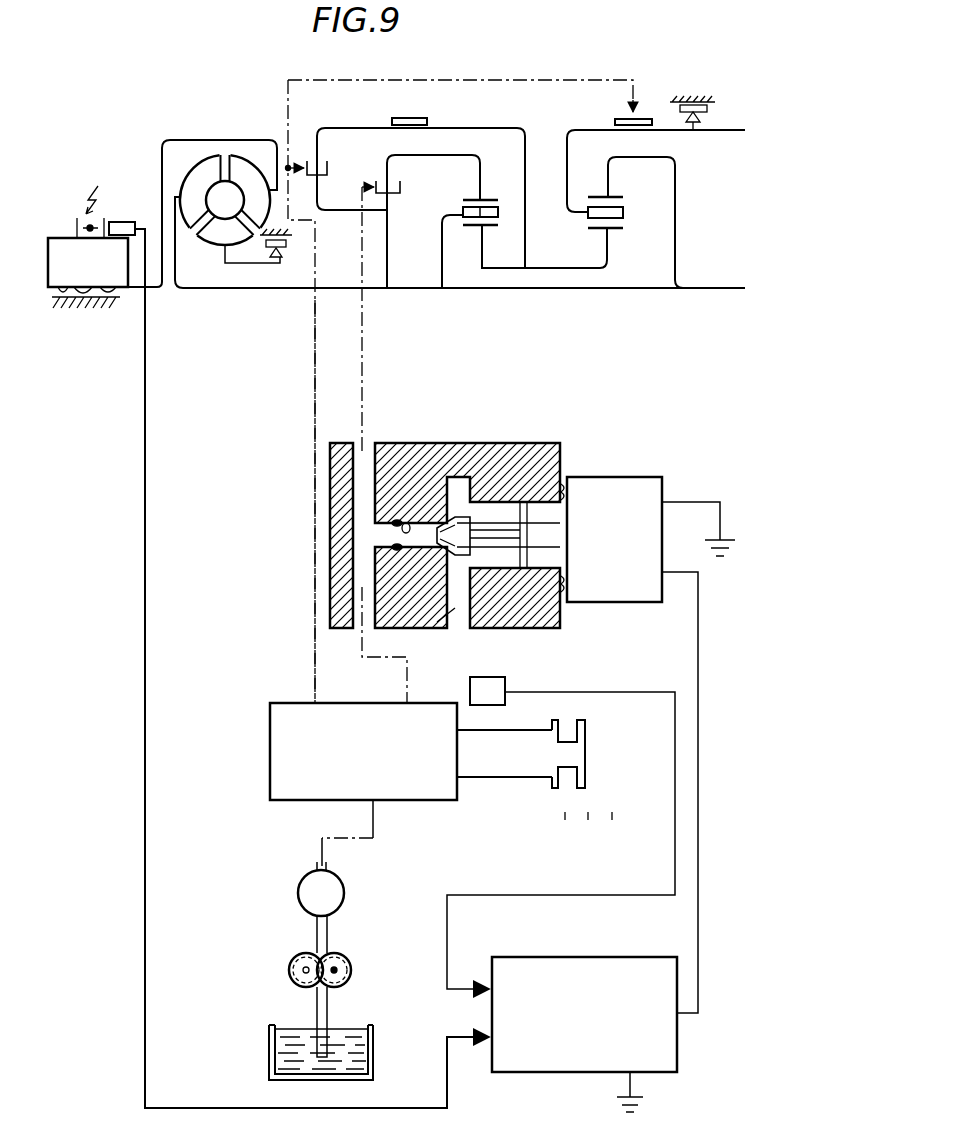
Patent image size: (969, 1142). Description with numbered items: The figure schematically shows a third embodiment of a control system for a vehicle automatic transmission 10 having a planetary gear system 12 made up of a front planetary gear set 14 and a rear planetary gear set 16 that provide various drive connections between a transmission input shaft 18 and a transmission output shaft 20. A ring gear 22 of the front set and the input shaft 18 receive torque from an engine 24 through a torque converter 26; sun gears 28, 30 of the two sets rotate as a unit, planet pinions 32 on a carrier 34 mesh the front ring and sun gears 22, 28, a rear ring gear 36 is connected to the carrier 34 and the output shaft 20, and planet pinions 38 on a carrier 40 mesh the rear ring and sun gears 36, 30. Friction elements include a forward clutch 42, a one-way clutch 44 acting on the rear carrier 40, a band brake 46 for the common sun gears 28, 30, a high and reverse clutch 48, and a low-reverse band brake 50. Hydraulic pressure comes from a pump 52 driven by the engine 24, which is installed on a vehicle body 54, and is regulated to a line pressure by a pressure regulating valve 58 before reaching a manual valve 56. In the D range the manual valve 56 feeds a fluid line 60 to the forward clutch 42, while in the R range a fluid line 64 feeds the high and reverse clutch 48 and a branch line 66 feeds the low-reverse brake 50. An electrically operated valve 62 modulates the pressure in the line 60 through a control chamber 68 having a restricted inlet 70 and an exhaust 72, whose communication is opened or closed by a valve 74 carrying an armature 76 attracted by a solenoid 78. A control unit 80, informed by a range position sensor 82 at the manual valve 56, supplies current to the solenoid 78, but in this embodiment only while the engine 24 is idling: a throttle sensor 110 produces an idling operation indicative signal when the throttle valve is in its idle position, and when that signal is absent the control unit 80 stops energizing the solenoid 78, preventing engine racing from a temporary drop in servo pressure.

The vehicle automatic transmission 10 is at (563, 78).
The planetary gear system 12 is at (542, 158).
The front planetary gear set 14 is at (452, 207).
The rear planetary gear set 16 is at (615, 238).
The transmission input shaft 18 is at (266, 292).
The transmission output shaft 20 is at (713, 287).
The ring gear 22 is at (490, 198).
The engine 24 is at (63, 237).
The torque converter 26 is at (208, 153).
The sun gear 28 is at (488, 227).
The sun gear 30 is at (592, 228).
The planet pinions 32 is at (468, 222).
The carrier 34 is at (442, 247).
The ring gear 36 is at (612, 197).
The planet pinions 38 is at (623, 214).
The carrier 40 is at (565, 192).
The forward clutch 42 is at (401, 187).
The one-way clutch 44 is at (700, 110).
The band brake 46 is at (425, 118).
The high and reverse clutch 48 is at (328, 167).
The low-reverse band brake 50 is at (647, 117).
The pump 52 is at (292, 955).
The vehicle body 54 is at (120, 302).
The manual valve 56 is at (270, 787).
The pressure regulating valve 58 is at (298, 889).
The fluid line 60 is at (365, 382).
The electrically operated valve 62 is at (469, 525).
The fluid line 64 is at (313, 395).
The branch line 66 is at (305, 80).
The control chamber 68 is at (487, 560).
The restricted inlet 70 is at (413, 527).
The exhaust 72 is at (445, 624).
The valve 74 is at (452, 517).
The armature 76 is at (500, 533).
The solenoid 78 is at (648, 477).
The control unit 80 is at (512, 1073).
The range position sensor 82 is at (507, 685).
The throttle sensor 110 is at (123, 222).